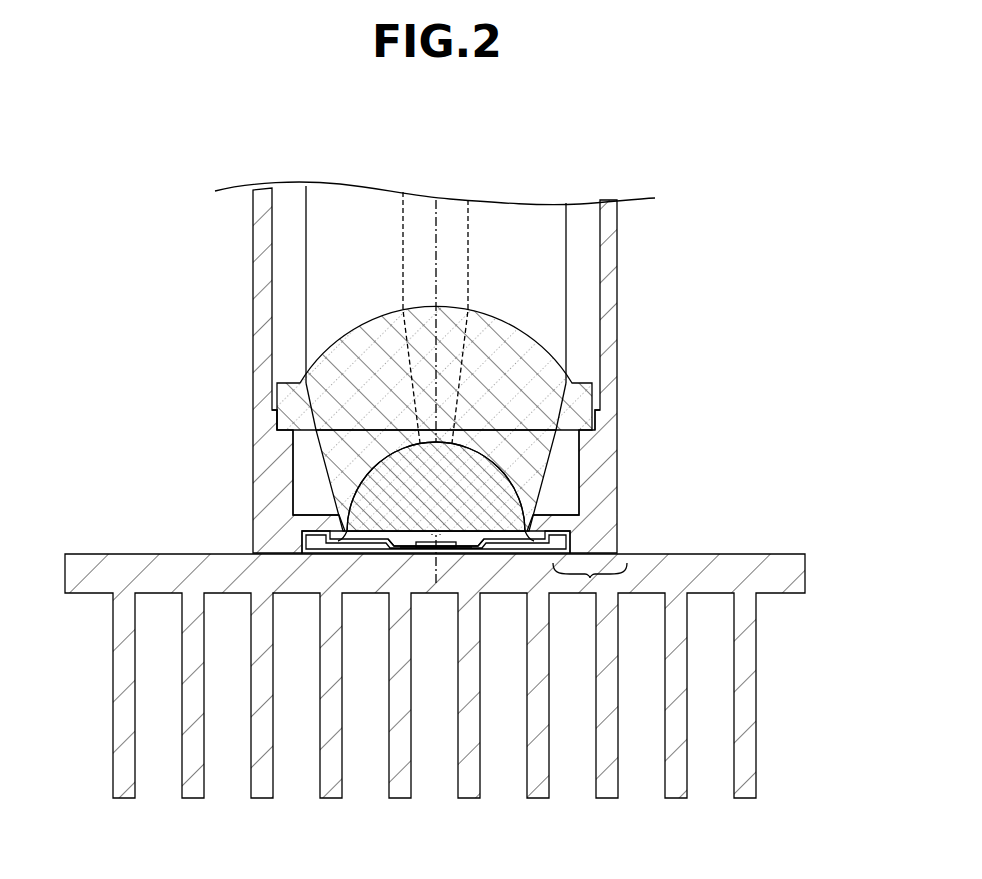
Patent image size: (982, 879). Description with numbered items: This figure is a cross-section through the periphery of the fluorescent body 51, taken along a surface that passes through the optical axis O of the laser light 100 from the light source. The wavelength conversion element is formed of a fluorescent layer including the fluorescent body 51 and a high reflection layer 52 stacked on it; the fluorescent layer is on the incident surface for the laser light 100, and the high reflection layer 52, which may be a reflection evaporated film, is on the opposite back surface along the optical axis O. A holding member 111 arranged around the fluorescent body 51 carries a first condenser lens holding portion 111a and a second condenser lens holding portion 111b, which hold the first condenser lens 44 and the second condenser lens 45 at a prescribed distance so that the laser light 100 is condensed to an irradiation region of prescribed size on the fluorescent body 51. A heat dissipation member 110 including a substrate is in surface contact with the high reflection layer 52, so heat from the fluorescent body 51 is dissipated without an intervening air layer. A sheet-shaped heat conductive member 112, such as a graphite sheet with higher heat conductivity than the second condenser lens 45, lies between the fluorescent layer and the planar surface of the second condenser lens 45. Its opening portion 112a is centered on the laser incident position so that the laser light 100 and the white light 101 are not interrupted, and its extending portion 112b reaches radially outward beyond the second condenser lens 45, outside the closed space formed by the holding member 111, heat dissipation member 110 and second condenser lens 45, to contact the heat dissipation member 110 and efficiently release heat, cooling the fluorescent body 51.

The laser light 100 is at (415, 243).
The white light 101 is at (308, 305).
The first condenser lens 44 is at (282, 400).
The second condenser lens 45 is at (392, 470).
The fluorescent body 51 is at (421, 547).
The high reflection layer 52 is at (440, 554).
The heat dissipation member 110 is at (190, 798).
The holding member 111 is at (617, 258).
The first condenser lens holding portion 111a is at (598, 419).
The second condenser lens holding portion 111b is at (545, 517).
The heat conductive member 112 is at (548, 526).
The opening portion 112a is at (397, 554).
The extending portion 112b is at (590, 578).
The optical axis O is at (437, 246).